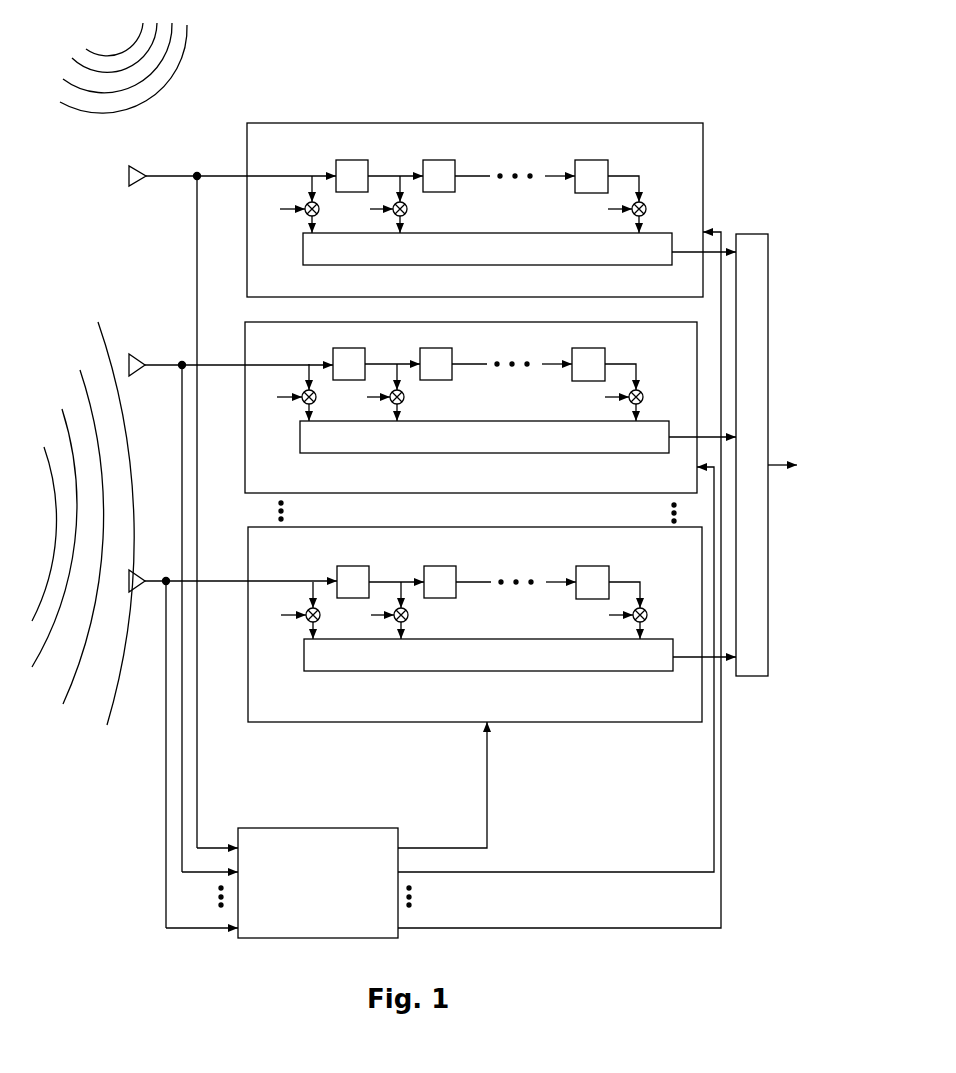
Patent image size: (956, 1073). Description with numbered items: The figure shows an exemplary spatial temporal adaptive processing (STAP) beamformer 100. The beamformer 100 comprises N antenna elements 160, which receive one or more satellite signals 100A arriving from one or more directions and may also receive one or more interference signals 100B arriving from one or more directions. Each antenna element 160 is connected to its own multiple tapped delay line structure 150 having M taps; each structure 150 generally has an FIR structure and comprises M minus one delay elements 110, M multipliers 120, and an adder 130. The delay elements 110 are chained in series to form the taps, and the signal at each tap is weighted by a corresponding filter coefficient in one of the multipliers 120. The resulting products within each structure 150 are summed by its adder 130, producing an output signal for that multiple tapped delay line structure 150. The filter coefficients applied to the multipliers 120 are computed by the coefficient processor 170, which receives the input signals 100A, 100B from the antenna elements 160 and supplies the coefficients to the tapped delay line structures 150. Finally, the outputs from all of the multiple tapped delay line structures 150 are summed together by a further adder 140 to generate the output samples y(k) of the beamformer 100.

The spatial temporal adaptive processing (STAP) beamformer 100 is at (607, 102).
The satellite signals 100A is at (107, 344).
The interference signals 100B is at (184, 46).
The delay elements 110 is at (605, 560).
The multipliers 120 is at (660, 627).
The adder 130 is at (663, 697).
The adder 140 is at (768, 300).
The multiple tapped delay line structure 150 is at (248, 704).
The antenna elements 160 is at (148, 600).
The coefficient processor 170 is at (398, 833).